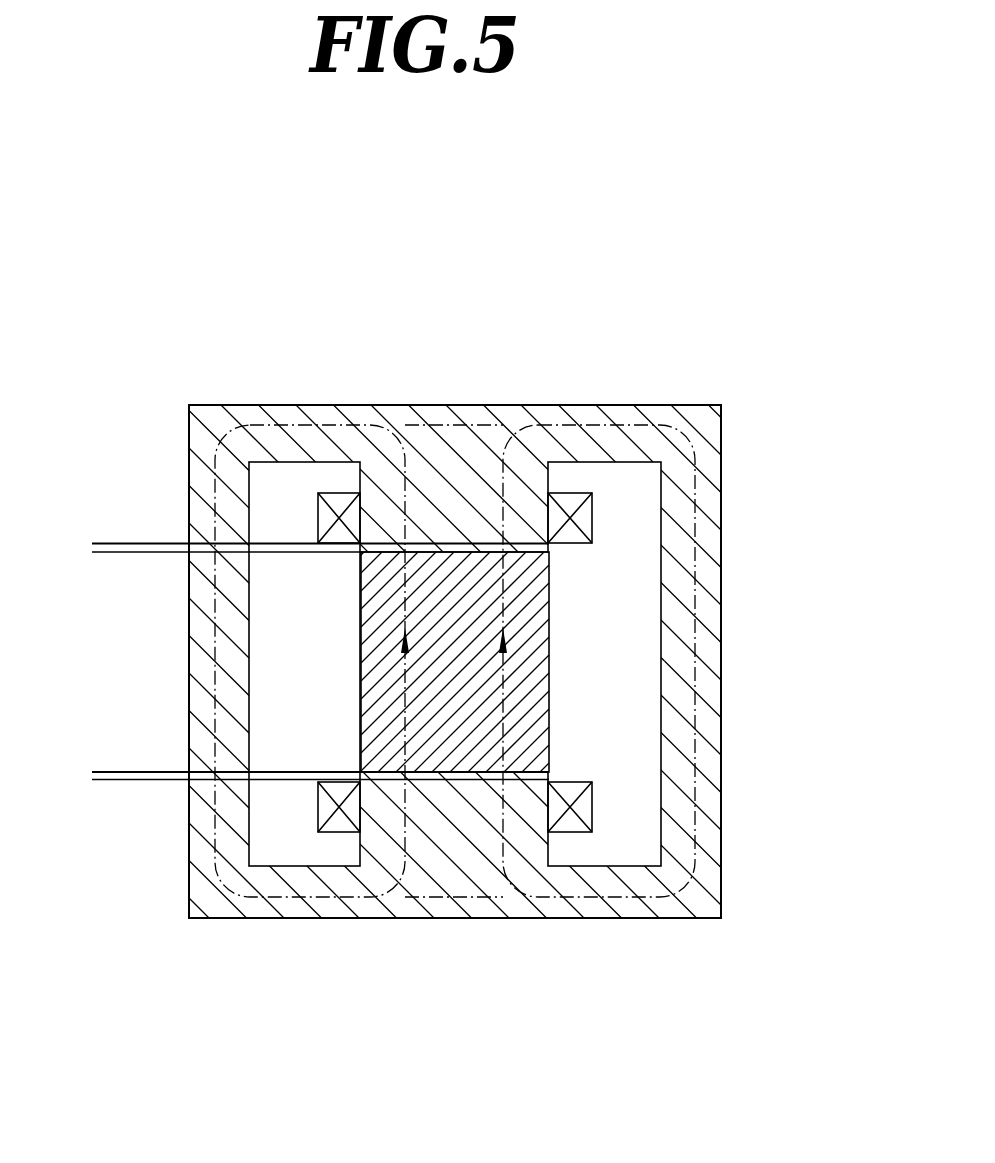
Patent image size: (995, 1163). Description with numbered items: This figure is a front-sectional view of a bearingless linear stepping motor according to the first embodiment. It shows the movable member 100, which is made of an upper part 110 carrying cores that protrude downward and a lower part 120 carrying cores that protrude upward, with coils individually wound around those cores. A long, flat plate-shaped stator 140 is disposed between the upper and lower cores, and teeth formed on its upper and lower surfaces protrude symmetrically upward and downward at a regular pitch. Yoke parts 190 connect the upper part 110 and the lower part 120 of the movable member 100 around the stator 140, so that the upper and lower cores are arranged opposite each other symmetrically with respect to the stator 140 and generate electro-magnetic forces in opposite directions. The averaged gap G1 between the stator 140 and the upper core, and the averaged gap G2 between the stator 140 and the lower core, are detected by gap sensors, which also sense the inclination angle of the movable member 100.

The movable member 100 is at (721, 360).
The upper part of the movable member 110 is at (458, 462).
The lower part of the movable member 120 is at (457, 842).
The stator 140 is at (530, 602).
The yoke parts 190 is at (722, 690).
The averaged gap between stator and upper core G1 is at (106, 510).
The averaged gap between stator and lower core G2 is at (106, 812).